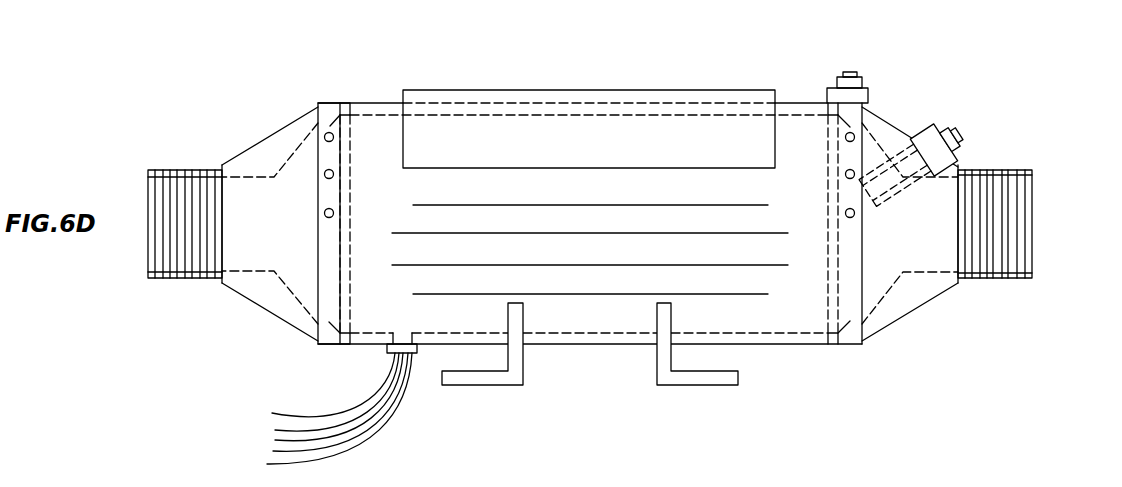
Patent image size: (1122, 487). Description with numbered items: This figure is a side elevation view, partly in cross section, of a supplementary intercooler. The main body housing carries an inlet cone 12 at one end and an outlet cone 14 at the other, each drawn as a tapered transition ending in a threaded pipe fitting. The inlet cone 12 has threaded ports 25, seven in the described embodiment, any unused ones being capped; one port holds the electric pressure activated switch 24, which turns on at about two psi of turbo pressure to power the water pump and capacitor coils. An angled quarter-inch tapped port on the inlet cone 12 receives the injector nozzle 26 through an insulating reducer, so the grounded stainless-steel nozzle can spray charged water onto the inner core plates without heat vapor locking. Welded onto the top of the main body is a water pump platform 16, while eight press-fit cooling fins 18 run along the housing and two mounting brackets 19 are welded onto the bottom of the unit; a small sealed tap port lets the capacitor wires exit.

The inlet cone 12 is at (922, 307).
The outlet cone 14 is at (262, 309).
The water pump platform 16 is at (586, 90).
The press-fit cooling fins 18 is at (521, 205).
The mounting brackets 19 is at (509, 386).
The electric pressure activated switch 24 is at (862, 66).
The threaded ports 25 is at (325, 211).
The injector nozzle 26 is at (905, 130).